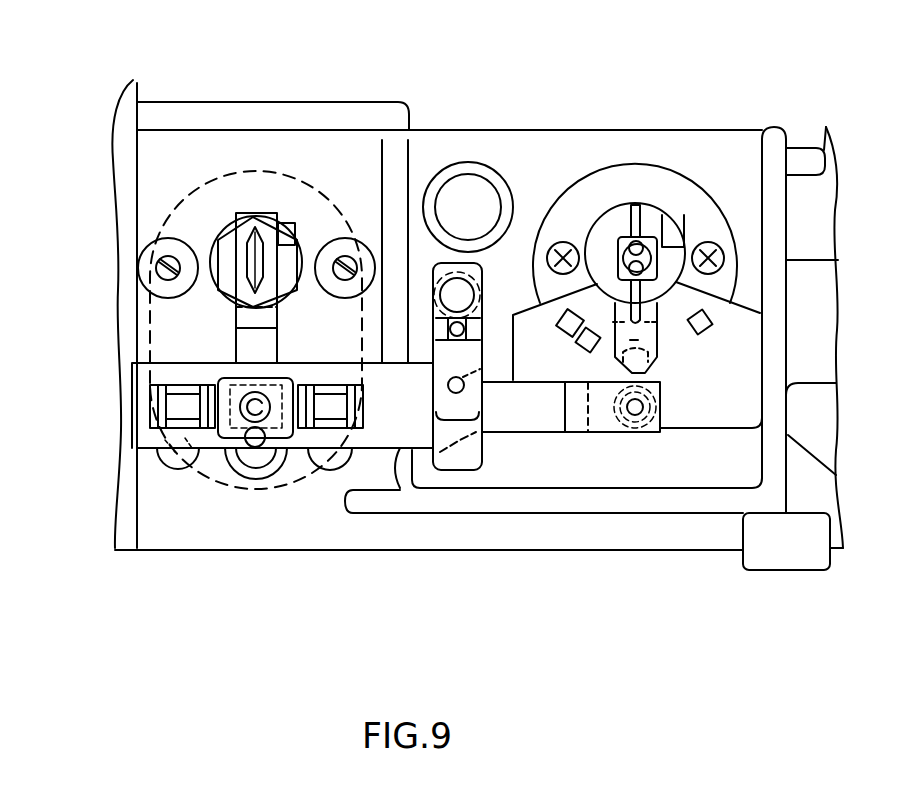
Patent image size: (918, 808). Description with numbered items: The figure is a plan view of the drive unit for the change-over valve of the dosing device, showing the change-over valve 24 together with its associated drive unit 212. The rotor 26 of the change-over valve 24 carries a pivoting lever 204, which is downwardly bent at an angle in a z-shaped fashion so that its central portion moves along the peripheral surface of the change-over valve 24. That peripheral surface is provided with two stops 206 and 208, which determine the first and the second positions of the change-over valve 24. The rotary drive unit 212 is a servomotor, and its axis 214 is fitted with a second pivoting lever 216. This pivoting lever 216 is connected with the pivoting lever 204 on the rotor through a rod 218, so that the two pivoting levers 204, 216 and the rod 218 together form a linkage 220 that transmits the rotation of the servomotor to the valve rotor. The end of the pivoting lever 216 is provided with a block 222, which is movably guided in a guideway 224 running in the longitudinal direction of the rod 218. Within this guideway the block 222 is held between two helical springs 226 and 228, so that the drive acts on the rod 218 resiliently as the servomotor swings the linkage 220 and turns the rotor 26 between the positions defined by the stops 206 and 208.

The change-over valve 24 is at (668, 156).
The rotor 26 is at (653, 218).
The pivoting lever 204 is at (660, 325).
The stop 206 is at (700, 333).
The stop 208 is at (597, 340).
The rotary drive unit 212 is at (305, 197).
The axis 214 is at (232, 222).
The pivoting lever 216 is at (268, 358).
The rod 218 is at (548, 418).
The linkage 220 is at (170, 480).
The block 222 is at (297, 441).
The guideway 224 is at (187, 382).
The helical spring 226 is at (155, 431).
The helical spring 228 is at (353, 450).